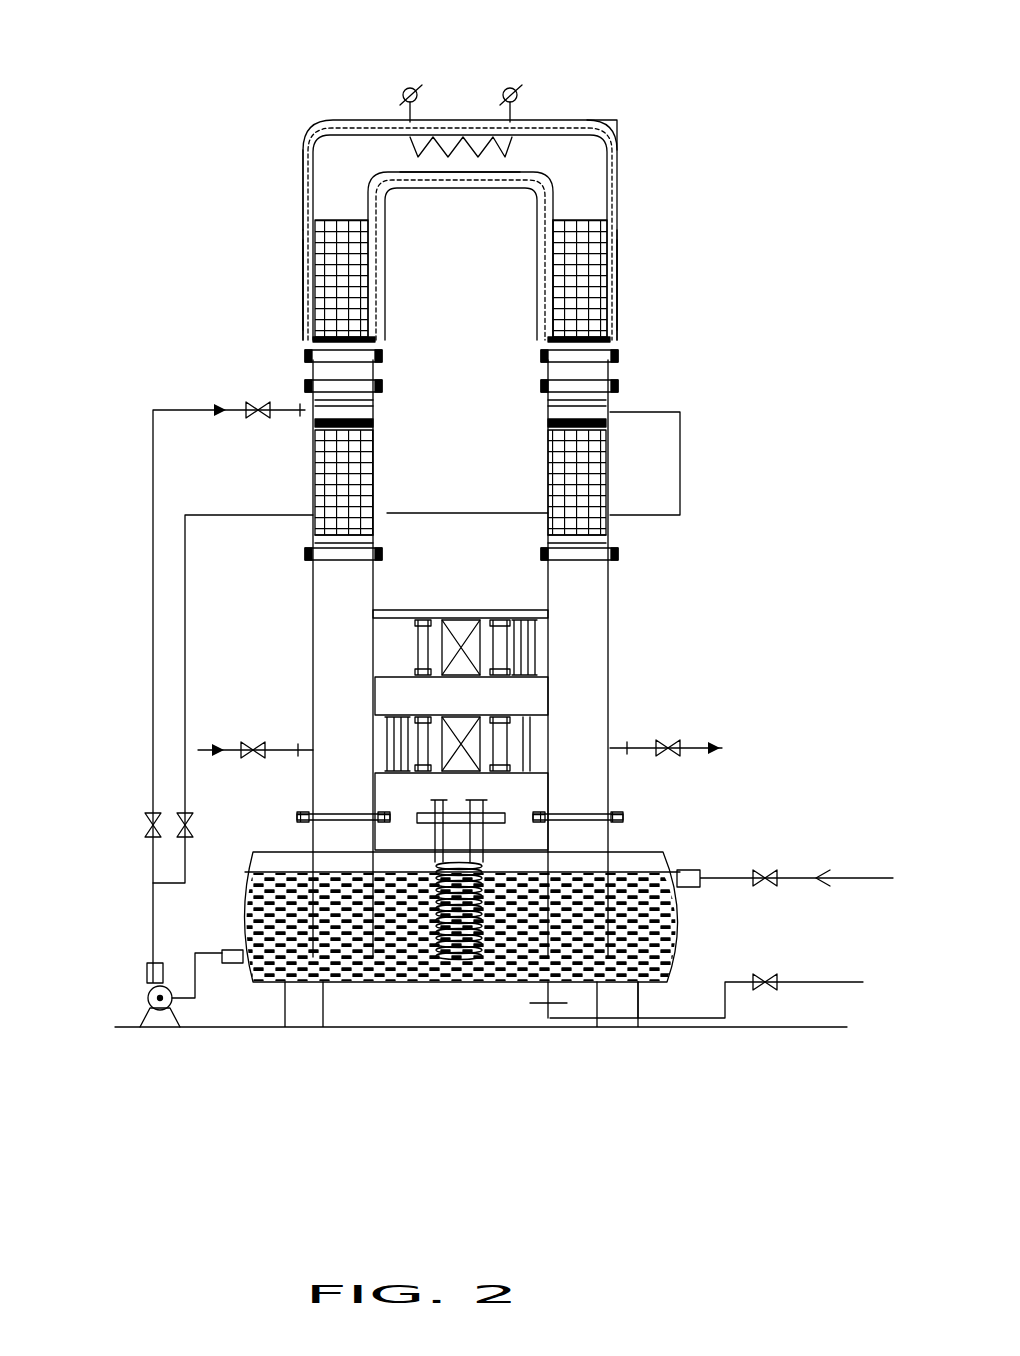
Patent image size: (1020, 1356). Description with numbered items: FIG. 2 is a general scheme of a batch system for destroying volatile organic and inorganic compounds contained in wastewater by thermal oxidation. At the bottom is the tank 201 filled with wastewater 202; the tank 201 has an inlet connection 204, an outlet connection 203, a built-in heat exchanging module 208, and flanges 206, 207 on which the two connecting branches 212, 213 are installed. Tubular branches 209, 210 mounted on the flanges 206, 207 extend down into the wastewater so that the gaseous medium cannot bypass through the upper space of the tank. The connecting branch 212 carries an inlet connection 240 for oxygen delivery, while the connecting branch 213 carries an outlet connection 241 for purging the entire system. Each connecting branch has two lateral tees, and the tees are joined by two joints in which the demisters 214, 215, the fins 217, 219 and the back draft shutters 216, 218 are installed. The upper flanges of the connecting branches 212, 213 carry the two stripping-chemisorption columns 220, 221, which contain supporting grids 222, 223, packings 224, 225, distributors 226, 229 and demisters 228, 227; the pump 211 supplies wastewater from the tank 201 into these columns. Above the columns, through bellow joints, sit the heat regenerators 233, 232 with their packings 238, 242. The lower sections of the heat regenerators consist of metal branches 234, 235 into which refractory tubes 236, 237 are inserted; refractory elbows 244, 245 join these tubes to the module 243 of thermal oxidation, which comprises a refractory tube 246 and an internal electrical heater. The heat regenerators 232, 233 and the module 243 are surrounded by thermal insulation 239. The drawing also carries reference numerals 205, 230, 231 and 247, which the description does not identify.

The tank 201 is at (672, 865).
The wastewater 202 is at (663, 945).
The outlet connection 203 is at (230, 948).
The inlet connection 204 is at (705, 874).
The drain valve line 205 is at (537, 992).
The flange 206 is at (305, 815).
The flange 207 is at (614, 852).
The heat exchanging module 208 is at (443, 957).
The tubular branch 209 is at (307, 872).
The tubular branch 210 is at (625, 850).
The pump 211 is at (150, 990).
The connecting branch 212 is at (412, 708).
The connecting branch 213 is at (613, 675).
The demister 214 is at (385, 753).
The demister 215 is at (612, 612).
The back draft shutter 216 is at (425, 665).
The fin 217 is at (468, 752).
The back draft shutter 218 is at (530, 640).
The fin 219 is at (423, 620).
The stripping-chemisorption column 220 is at (313, 480).
The stripping-chemisorption column 221 is at (613, 490).
The supporting grid 222 is at (313, 518).
The supporting grid 223 is at (620, 530).
The packing 224 is at (347, 473).
The packing 225 is at (613, 437).
The distributor 226 is at (362, 422).
The demister 227 is at (617, 387).
The demister 228 is at (357, 400).
The distributor 229 is at (553, 427).
The right upper flange 230 is at (617, 358).
The left upper flange 231 is at (307, 360).
The heat regenerator 232 is at (640, 265).
The heat regenerator 233 is at (280, 256).
The metal branch 234 is at (305, 305).
The metal branch 235 is at (613, 300).
The refractory tube 236 is at (305, 245).
The refractory tube 237 is at (618, 247).
The packing 238 is at (362, 302).
The thermal insulation 239 is at (617, 200).
The inlet connection 240 is at (293, 747).
The outlet connection 241 is at (633, 743).
The packing 242 is at (538, 305).
The module of thermal oxidation 243 is at (462, 80).
The refractory elbow 244 is at (308, 125).
The refractory elbow 245 is at (613, 140).
The refractory tube 246 is at (457, 187).
The right gauge 247 is at (513, 130).